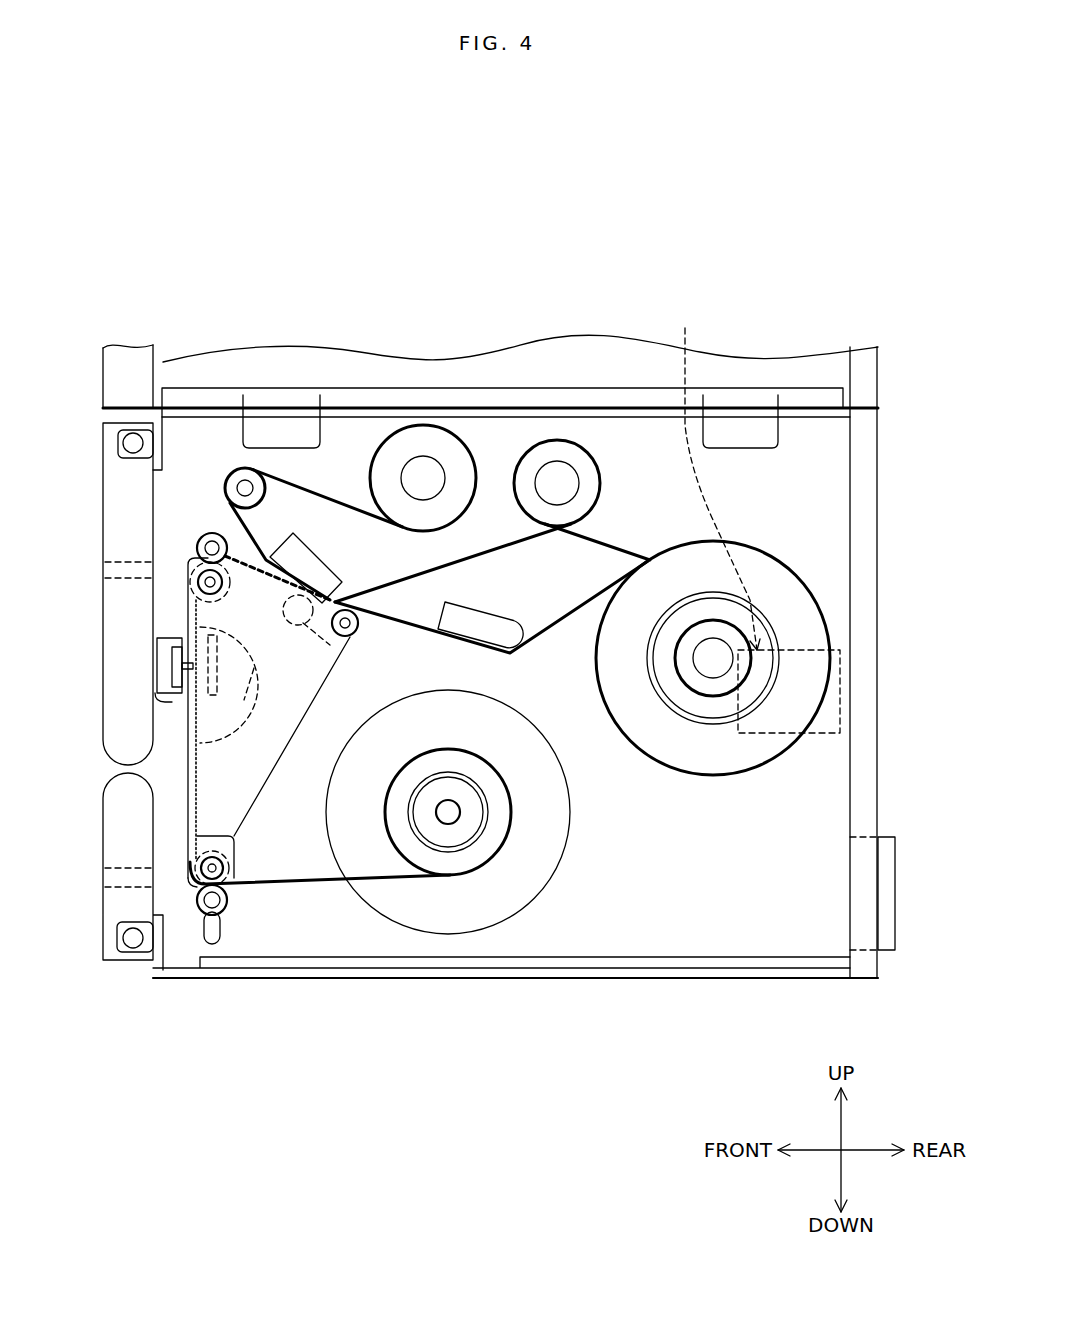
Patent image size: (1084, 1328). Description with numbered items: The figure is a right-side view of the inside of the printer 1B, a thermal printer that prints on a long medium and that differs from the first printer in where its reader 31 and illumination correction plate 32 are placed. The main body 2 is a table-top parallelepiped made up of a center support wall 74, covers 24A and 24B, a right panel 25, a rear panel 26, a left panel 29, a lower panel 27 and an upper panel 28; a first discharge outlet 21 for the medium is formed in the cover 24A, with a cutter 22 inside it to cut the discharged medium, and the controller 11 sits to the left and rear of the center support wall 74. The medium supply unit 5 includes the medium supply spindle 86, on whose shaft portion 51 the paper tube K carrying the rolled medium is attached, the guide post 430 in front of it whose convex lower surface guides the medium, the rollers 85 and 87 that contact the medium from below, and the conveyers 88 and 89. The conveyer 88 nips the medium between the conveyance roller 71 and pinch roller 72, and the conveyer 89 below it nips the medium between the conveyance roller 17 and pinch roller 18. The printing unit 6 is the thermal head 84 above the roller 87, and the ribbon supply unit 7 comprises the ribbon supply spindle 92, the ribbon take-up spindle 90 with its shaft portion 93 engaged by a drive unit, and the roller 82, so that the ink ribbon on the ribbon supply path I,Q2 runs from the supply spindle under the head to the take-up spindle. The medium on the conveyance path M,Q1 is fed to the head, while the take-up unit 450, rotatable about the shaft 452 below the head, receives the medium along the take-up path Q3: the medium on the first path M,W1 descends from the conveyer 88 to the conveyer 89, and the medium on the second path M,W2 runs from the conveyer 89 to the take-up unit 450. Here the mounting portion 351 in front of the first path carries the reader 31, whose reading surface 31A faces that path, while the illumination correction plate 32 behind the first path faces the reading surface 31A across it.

The printer 1B is at (493, 187).
The main body 2 is at (766, 307).
The medium supply unit 5 is at (785, 552).
The printing unit 6 is at (296, 550).
The ribbon supply unit 7 is at (515, 410).
The controller 11 is at (715, 476).
The conveyance roller 17 is at (190, 890).
The pinch roller 18 is at (212, 905).
The first discharge outlet 21 is at (128, 565).
The cutter 22 is at (105, 562).
The cover 24A is at (130, 722).
The cover 24B is at (130, 900).
The right panel 25 is at (597, 373).
The rear panel 26 is at (882, 575).
The lower panel 27 is at (643, 978).
The upper panel 28 is at (795, 405).
The left panel 29 is at (793, 470).
The reader 31 is at (167, 667).
The reading surface 31A is at (197, 747).
The illumination correction plate 32 is at (207, 632).
The mounting portion 351 is at (163, 702).
The guide post 430 is at (447, 598).
The take-up unit 450 is at (448, 813).
The shaft 452 is at (456, 880).
The shaft portion 51 is at (715, 658).
The conveyance roller 71 is at (208, 532).
The pinch roller 72 is at (198, 588).
The center support wall 74 is at (643, 843).
The roller 82 is at (245, 480).
The thermal head 84 is at (313, 593).
The roller 85 is at (347, 610).
The medium supply spindle 86 is at (789, 611).
The roller 87 is at (330, 645).
The conveyer 88 is at (192, 543).
The conveyer 89 is at (243, 893).
The ribbon take-up spindle 90 is at (433, 422).
The ribbon supply spindle 92 is at (585, 444).
The shaft portion 93 is at (421, 480).
The paper tube K is at (763, 703).
The take-up path Q3 is at (180, 838).
The medium on first path M,W1 is at (279, 676).
The medium on second path M,W2 is at (328, 875).
The medium on conveyance path M,Q1 is at (560, 625).
The ink ribbon on ribbon supply path I,Q2 is at (500, 543).